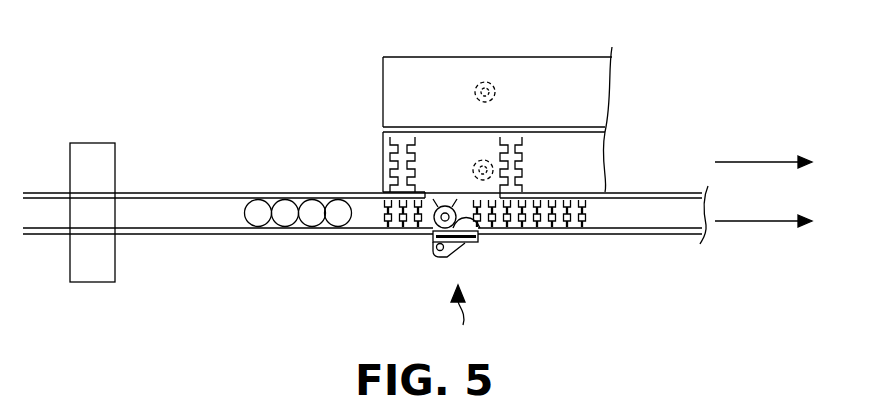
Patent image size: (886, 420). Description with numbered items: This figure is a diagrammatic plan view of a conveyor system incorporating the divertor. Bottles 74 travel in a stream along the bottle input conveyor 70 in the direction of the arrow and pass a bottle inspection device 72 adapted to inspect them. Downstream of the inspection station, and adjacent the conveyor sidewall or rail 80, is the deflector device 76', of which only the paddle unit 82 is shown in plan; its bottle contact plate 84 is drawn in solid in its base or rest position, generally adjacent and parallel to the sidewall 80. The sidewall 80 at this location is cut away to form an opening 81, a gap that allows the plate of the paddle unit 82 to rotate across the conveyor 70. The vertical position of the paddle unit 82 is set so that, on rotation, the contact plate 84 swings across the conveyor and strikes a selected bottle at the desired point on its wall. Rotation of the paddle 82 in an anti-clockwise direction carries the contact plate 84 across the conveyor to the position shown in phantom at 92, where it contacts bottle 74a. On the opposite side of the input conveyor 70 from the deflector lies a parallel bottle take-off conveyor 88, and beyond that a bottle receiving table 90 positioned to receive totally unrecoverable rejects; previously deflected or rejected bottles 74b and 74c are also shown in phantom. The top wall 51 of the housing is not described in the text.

The upper housing wall 51 is at (495, 65).
The bottle input conveyor 70 is at (342, 234).
The bottle inspection device 72 is at (83, 277).
The bottles 74 is at (257, 217).
The bottle 74a is at (440, 208).
The previously deflected bottle 74b is at (473, 165).
The previously deflected bottle 74c is at (497, 92).
The deflector device 76' is at (466, 315).
The conveyor sidewall 80 is at (400, 234).
The opening 81 is at (432, 233).
The paddle unit 82 is at (470, 255).
The bottle contact plate 84 is at (478, 238).
The bottle take-off conveyor 88 is at (579, 171).
The bottle receiving table 90 is at (589, 113).
The phantom position of bottle contact plate 92 is at (481, 235).